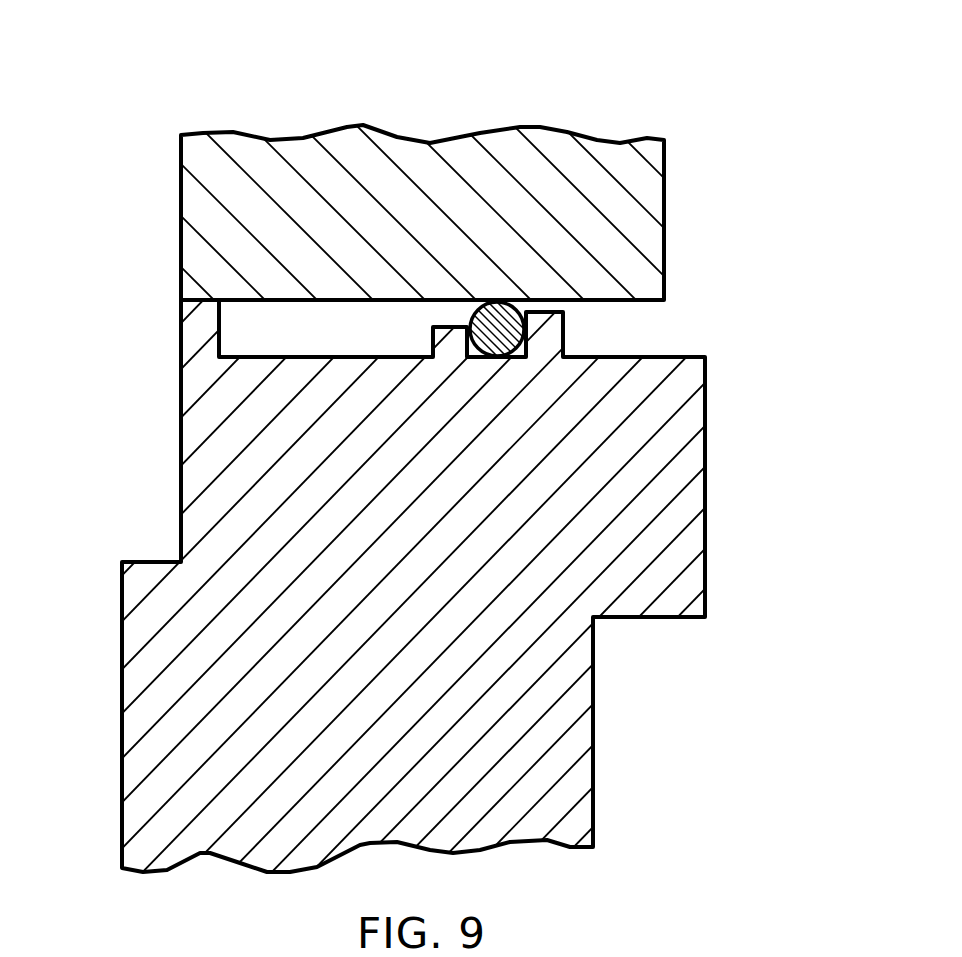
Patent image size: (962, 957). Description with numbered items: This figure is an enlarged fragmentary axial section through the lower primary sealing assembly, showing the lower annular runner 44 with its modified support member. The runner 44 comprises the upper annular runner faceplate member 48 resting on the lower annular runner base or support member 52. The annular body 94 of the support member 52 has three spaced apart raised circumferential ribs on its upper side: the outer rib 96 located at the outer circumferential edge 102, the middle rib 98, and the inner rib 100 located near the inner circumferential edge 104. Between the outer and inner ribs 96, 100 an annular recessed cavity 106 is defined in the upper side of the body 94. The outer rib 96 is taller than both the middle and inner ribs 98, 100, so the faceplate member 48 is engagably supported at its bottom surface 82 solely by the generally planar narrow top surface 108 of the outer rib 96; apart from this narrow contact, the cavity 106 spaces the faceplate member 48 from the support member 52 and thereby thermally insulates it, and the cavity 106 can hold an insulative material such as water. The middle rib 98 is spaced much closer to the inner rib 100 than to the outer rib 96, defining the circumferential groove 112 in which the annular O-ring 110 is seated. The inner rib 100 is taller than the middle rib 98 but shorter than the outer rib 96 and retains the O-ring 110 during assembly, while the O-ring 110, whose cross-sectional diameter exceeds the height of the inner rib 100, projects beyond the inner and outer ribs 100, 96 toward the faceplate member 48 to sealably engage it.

The lower annular runner 44 is at (724, 276).
The upper annular runner faceplate member 48 is at (664, 193).
The lower annular runner base or support member 52 is at (732, 430).
The bottom surface 82 is at (628, 305).
The annular body 94 is at (706, 528).
The outer rib 96 is at (190, 334).
The middle rib 98 is at (440, 333).
The inner rib 100 is at (552, 335).
The outer circumferential edge 102 is at (183, 400).
The inner circumferential edge 104 is at (706, 370).
The annular recessed cavity 106 is at (298, 357).
The top surface 108 is at (190, 297).
The O-ring 110 is at (527, 312).
The circumferential groove 112 is at (507, 320).